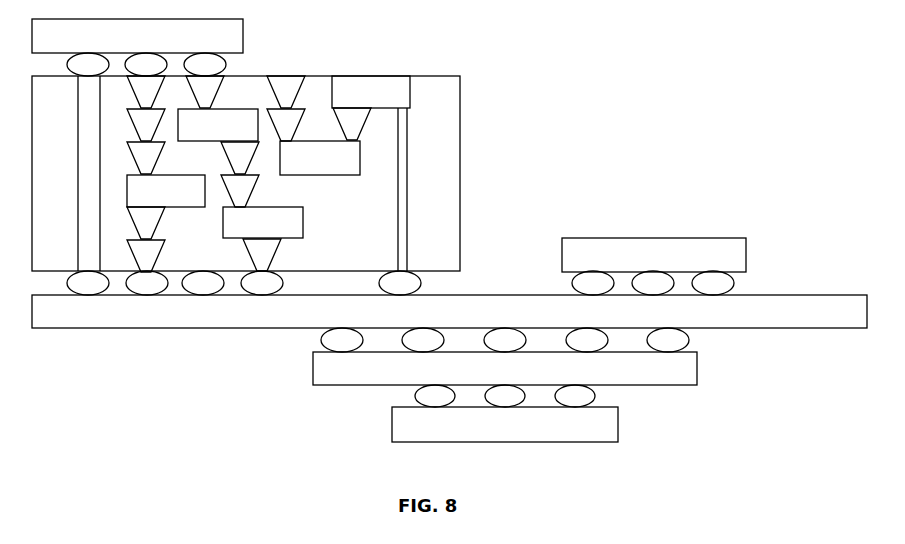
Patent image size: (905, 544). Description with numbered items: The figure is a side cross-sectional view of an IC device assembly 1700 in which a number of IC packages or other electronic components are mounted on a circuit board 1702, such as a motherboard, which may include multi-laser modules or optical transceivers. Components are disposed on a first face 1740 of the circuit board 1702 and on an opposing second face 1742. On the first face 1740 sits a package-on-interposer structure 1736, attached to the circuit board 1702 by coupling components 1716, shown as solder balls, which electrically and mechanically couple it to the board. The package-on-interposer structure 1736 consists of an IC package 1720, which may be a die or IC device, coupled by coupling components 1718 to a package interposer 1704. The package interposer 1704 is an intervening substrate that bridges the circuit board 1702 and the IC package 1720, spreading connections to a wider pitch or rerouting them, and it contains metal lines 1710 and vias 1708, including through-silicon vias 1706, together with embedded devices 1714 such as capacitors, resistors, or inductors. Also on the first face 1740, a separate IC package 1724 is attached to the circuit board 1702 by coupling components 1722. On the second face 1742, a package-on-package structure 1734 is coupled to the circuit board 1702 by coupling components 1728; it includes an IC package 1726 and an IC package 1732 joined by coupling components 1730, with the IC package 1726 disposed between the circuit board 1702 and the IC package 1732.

The IC device assembly 1700 is at (609, 78).
The circuit board 1702 is at (470, 321).
The package interposer 1704 is at (443, 76).
The through-silicon vias 1706 is at (433, 180).
The vias 1708 is at (276, 262).
The metal lines 1710 is at (290, 207).
The embedded devices 1714 is at (392, 103).
The coupling components 1716 is at (458, 282).
The coupling components 1718 is at (236, 63).
The IC package 1720 is at (158, 45).
The coupling components 1722 is at (751, 282).
The IC package 1724 is at (675, 262).
The IC package 1726 is at (526, 376).
The coupling components 1728 is at (305, 343).
The coupling components 1730 is at (612, 398).
The IC package 1732 is at (526, 432).
The package-on-package structure 1734 is at (210, 343).
The package-on-interposer structure 1736 is at (540, 18).
The first face 1740 is at (778, 234).
The second face 1742 is at (810, 380).